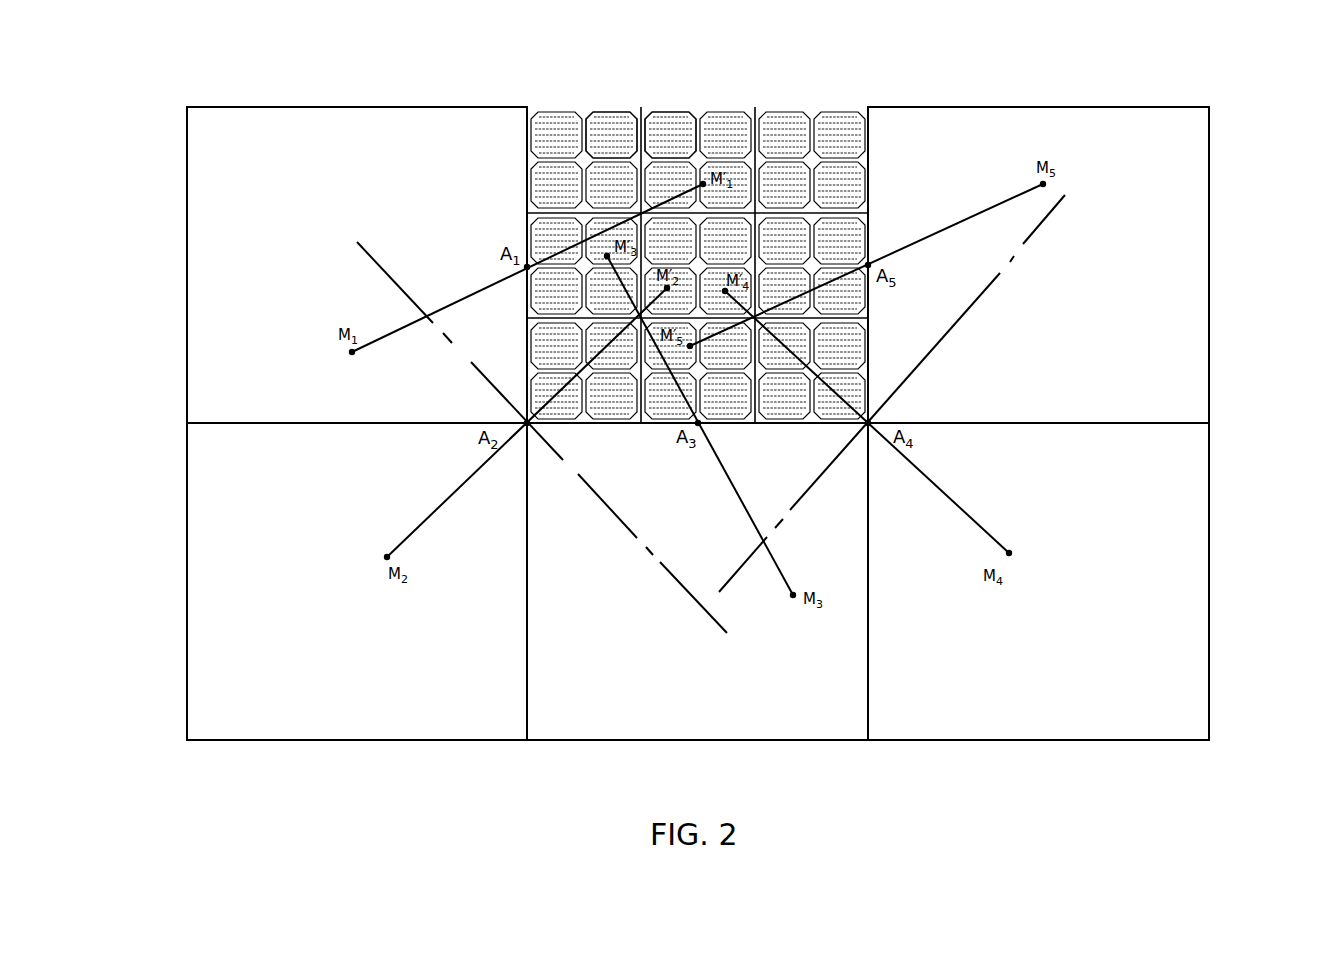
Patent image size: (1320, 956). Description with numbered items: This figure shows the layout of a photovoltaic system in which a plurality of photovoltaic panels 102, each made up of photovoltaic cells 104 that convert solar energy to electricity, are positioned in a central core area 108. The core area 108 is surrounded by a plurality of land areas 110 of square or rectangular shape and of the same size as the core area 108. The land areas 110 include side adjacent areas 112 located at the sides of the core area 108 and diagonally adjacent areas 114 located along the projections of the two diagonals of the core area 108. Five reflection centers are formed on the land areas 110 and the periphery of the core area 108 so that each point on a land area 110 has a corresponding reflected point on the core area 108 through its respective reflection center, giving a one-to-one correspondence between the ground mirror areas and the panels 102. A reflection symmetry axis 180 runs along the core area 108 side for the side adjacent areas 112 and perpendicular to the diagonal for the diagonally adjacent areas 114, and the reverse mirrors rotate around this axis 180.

The photovoltaic panel 102 is at (586, 110).
The photovoltaic cell 104 is at (660, 120).
The core area 108 is at (747, 107).
The land area 110 is at (968, 150).
The side adjacent area 112 is at (216, 248).
The diagonally adjacent area 114 is at (216, 616).
The reflection symmetry axis 180 is at (527, 158).